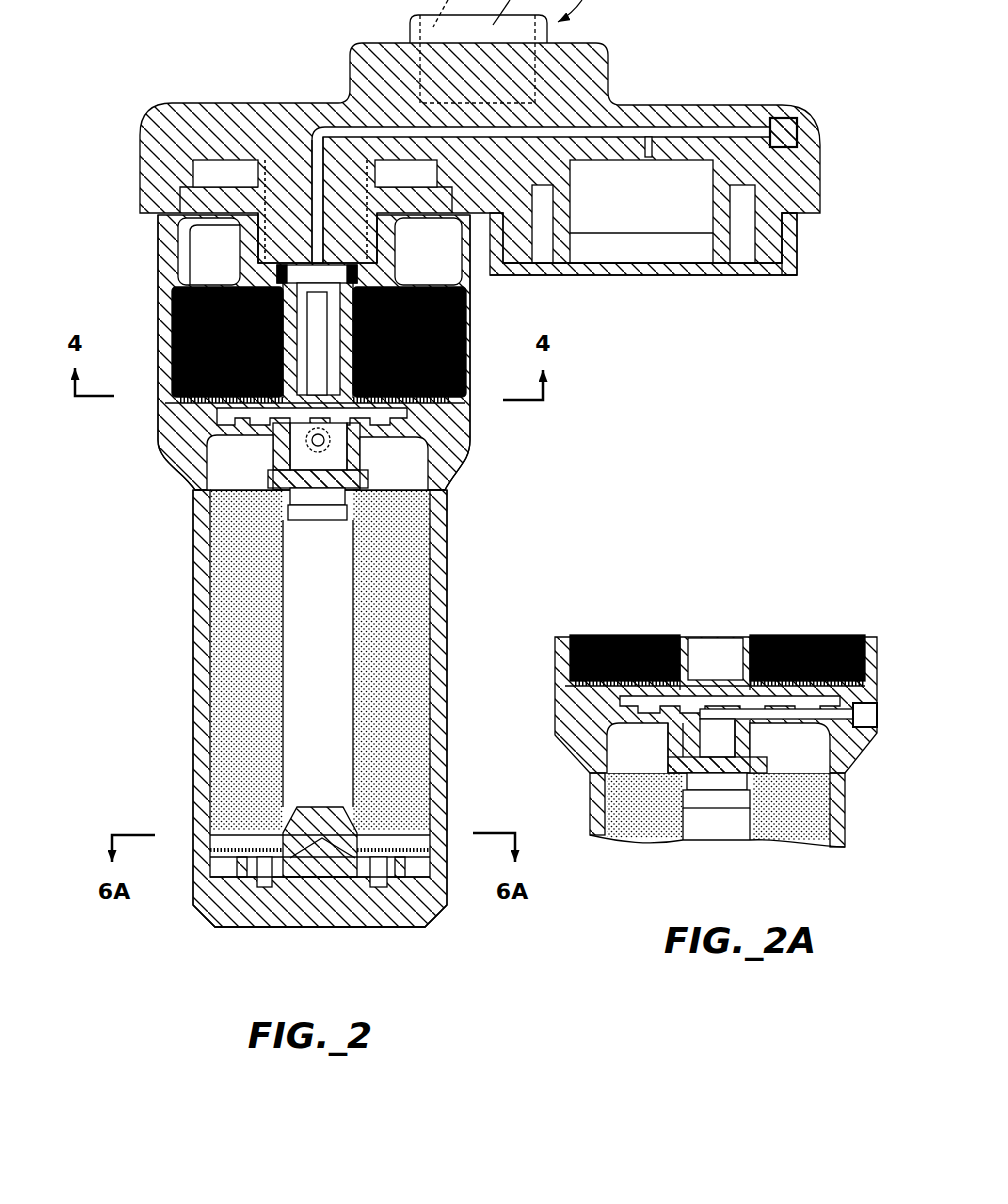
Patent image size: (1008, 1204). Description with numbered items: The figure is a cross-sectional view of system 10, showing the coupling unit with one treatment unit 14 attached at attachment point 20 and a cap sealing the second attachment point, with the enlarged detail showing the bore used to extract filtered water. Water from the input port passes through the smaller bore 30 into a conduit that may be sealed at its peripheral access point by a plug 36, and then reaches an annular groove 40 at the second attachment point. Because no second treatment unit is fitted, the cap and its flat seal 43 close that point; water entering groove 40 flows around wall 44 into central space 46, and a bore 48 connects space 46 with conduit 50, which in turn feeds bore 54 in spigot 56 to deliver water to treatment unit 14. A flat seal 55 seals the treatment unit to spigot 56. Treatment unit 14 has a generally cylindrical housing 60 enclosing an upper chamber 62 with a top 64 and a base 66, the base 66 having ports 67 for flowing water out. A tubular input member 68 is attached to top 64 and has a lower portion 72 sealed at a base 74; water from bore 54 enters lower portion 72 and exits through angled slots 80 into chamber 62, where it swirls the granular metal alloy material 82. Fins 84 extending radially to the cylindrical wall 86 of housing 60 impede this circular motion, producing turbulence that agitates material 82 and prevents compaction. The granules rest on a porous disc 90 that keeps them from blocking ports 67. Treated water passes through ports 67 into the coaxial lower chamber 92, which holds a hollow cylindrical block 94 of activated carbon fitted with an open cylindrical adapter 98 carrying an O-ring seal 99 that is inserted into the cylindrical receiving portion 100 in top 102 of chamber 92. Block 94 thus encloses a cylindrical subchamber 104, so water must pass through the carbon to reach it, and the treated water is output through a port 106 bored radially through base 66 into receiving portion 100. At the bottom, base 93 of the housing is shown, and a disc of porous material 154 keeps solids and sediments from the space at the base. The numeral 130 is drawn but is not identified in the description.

In FIG. 2, the system 10 is at (609, 414).
In FIG. 2, the treatment unit 14 is at (178, 643).
In FIG. 2, the attachment point 20 is at (140, 223).
In FIG. 2, the smaller bore 30 is at (403, 43).
In FIG. 2, the plug 36 is at (800, 113).
In FIG. 2, the annular groove 40 is at (541, 252).
In FIG. 2, the flat seal 43 is at (778, 268).
In FIG. 2, the wall 44 is at (558, 275).
In FIG. 2, the central space 46 is at (641, 211).
In FIG. 2, the bore 48 is at (649, 138).
In FIG. 2, the conduit 50 is at (708, 130).
In FIG. 2, the bore 54 is at (306, 135).
In FIG. 2, the flat seal 55 is at (273, 167).
In FIG. 2, the spigot 56 is at (263, 160).
In FIG. 2, the housing 60 is at (456, 674).
In FIG. 2, the upper chamber 62 is at (428, 251).
In FIG. 2, the top 64 is at (141, 136).
In FIG. 2, the base 66 is at (450, 453).
In FIG. 2, the ports 67 is at (230, 432).
In FIG. 2, the tubular input member 68 is at (168, 371).
In FIG. 2A, the tubular input member 68 is at (750, 637).
In FIG. 2, the lower portion 72 is at (465, 352).
In FIG. 2, the base 74 is at (168, 423).
In FIG. 2, the angled slots 80 is at (165, 343).
In FIG. 2, the granular metal alloy material 82 is at (165, 311).
In FIG. 2A, the granular metal alloy material 82 is at (612, 647).
In FIG. 2, the fins 84 is at (138, 178).
In FIG. 2, the cylindrical wall 86 is at (185, 250).
In FIG. 2, the disc 90 is at (477, 403).
In FIG. 2, the lower chamber 92 is at (394, 463).
In FIG. 2, the base 93 is at (340, 903).
In FIG. 2, the hollow cylindrical block 94 is at (410, 618).
In FIG. 2A, the hollow cylindrical block 94 is at (785, 825).
In FIG. 2, the open cylindrical adapter 98 is at (347, 497).
In FIG. 2A, the open cylindrical adapter 98 is at (835, 838).
In FIG. 2, the O ring seal 99 is at (268, 482).
In FIG. 2A, the O ring seal 99 is at (840, 810).
In FIG. 2, the cylindrical receiving portion 100 is at (373, 487).
In FIG. 2A, the cylindrical receiving portion 100 is at (718, 752).
In FIG. 2, the top 102 is at (273, 452).
In FIG. 2A, the top 102 is at (640, 727).
In FIG. 2, the cylindrical subchamber 104 is at (318, 663).
In FIG. 2A, the cylindrical subchamber 104 is at (716, 824).
In FIG. 2, the port 106 is at (212, 524).
In FIG. 2A, the port 106 is at (803, 640).
In FIG. 2, the filter block 130 is at (273, 580).
In FIG. 2, the disc of porous material 154 is at (450, 880).